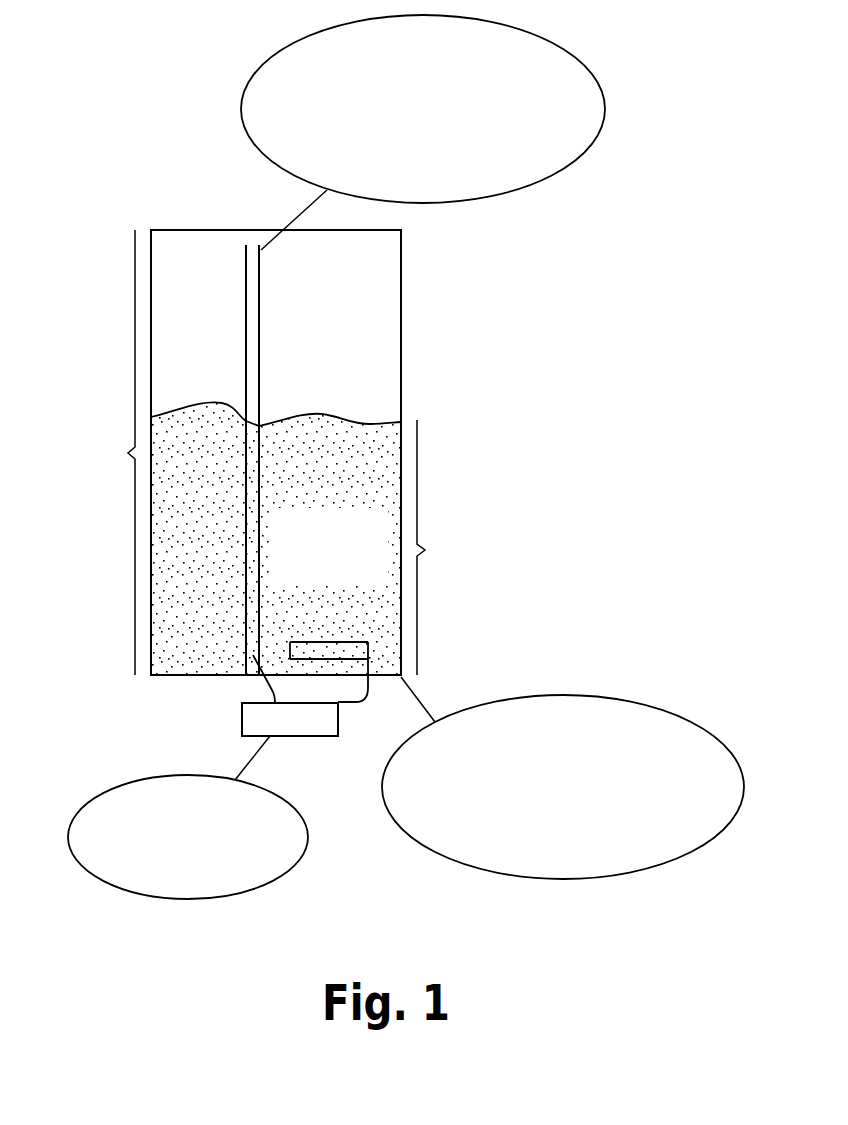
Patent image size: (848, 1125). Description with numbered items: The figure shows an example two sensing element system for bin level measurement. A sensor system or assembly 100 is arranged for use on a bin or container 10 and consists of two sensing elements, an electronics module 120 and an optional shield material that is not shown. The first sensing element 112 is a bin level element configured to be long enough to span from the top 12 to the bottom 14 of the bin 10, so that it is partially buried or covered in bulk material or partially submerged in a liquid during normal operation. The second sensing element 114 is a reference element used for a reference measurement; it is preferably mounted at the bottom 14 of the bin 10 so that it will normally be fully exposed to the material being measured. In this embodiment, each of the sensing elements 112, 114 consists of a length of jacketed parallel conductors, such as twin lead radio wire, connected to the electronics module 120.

The sensor system 100 is at (124, 90).
The bin 10 is at (401, 338).
The top of bin 12 is at (401, 232).
The bottom of bin 14 is at (328, 657).
The first sensing element 112 is at (523, 190).
The second sensing element 114 is at (663, 868).
The electronics module 120 is at (240, 895).